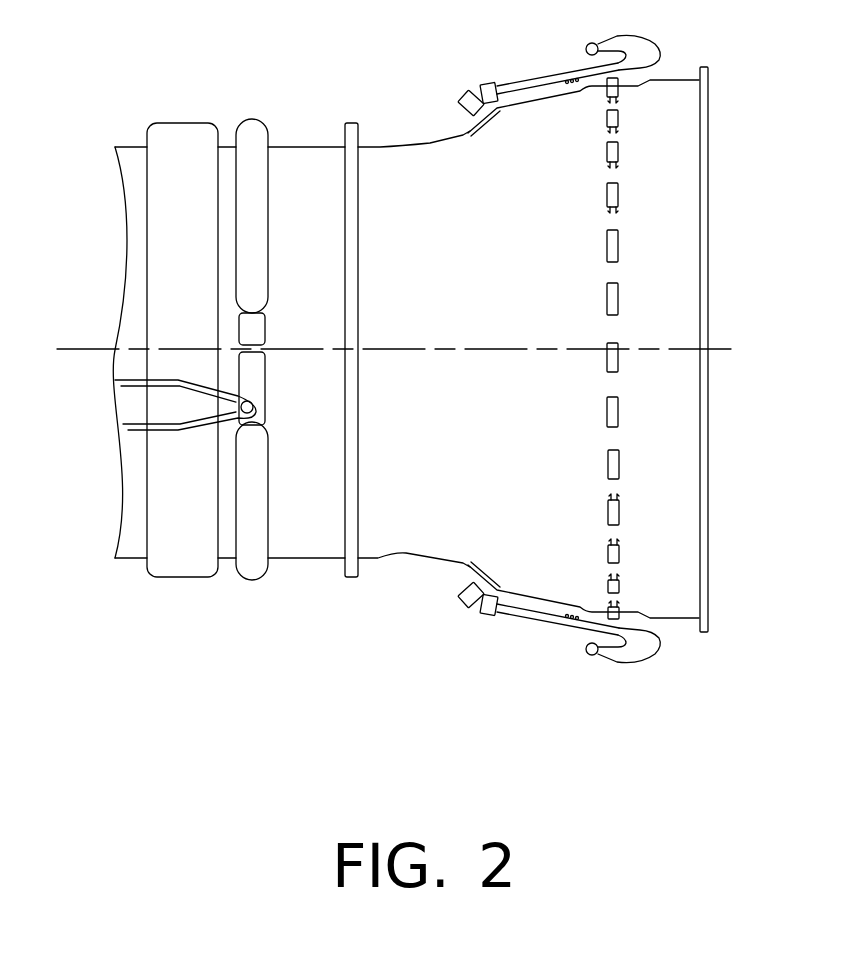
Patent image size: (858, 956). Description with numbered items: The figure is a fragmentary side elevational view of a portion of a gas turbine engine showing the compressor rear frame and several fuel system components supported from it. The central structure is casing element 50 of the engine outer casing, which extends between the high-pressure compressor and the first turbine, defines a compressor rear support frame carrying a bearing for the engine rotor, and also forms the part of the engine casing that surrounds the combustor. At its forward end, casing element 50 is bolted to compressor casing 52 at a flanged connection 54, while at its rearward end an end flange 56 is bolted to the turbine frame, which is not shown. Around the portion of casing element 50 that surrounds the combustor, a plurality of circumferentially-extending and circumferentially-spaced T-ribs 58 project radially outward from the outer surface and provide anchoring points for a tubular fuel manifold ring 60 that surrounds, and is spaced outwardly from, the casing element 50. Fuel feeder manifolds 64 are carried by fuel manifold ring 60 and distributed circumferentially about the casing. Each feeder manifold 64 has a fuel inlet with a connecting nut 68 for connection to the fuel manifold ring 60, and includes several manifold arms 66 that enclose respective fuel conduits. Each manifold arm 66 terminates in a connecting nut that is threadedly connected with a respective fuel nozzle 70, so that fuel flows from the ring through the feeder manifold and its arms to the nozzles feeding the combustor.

The casing element 50 is at (455, 219).
The compressor casing 52 is at (297, 160).
The flanged connection 54 is at (351, 124).
The end flange 56 is at (710, 457).
The T-ribs 58 is at (619, 153).
The tubular fuel manifold ring 60 is at (590, 43).
The fuel feeder manifolds 64 is at (648, 50).
The manifold arms 66 is at (565, 76).
The connecting nut 68 is at (487, 83).
The fuel nozzle 70 is at (461, 104).